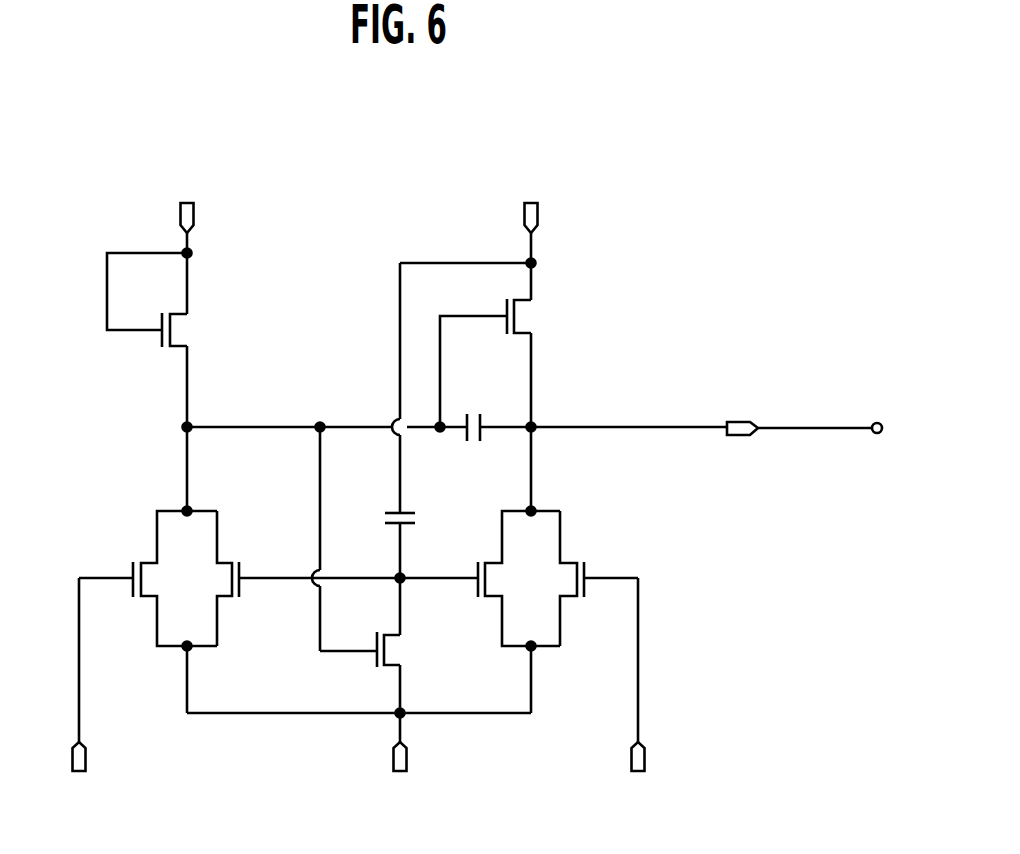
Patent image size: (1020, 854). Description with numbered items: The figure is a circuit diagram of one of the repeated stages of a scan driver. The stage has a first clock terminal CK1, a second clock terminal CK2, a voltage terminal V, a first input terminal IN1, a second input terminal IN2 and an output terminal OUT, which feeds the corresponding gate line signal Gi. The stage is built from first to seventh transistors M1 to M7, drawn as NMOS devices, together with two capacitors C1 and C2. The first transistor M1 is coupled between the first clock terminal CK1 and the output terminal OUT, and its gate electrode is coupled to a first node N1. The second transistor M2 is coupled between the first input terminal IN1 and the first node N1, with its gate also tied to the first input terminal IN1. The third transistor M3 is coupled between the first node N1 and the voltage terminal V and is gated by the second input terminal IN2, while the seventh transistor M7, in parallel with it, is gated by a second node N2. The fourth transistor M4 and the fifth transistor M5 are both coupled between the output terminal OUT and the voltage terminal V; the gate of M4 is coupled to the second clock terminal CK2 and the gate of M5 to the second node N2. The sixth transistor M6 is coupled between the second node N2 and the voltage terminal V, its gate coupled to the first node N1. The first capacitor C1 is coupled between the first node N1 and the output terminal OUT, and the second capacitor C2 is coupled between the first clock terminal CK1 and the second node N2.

The first input terminal IN1 is at (187, 243).
The second input terminal IN2 is at (80, 691).
The first clock terminal CK1 is at (473, 236).
The second clock terminal CK2 is at (638, 691).
The voltage terminal V is at (359, 757).
The output terminal OUT is at (797, 413).
The gate line output signal Gi is at (889, 429).
The first node N1 is at (444, 428).
The second node N2 is at (358, 566).
The first capacitor C1 is at (472, 413).
The second capacitor C2 is at (388, 570).
The first transistor M1 is at (493, 405).
The second transistor M2 is at (156, 340).
The third transistor M3 is at (148, 536).
The fourth transistor M4 is at (583, 612).
The fifth transistor M5 is at (519, 577).
The sixth transistor M6 is at (398, 687).
The seventh transistor M7 is at (211, 612).